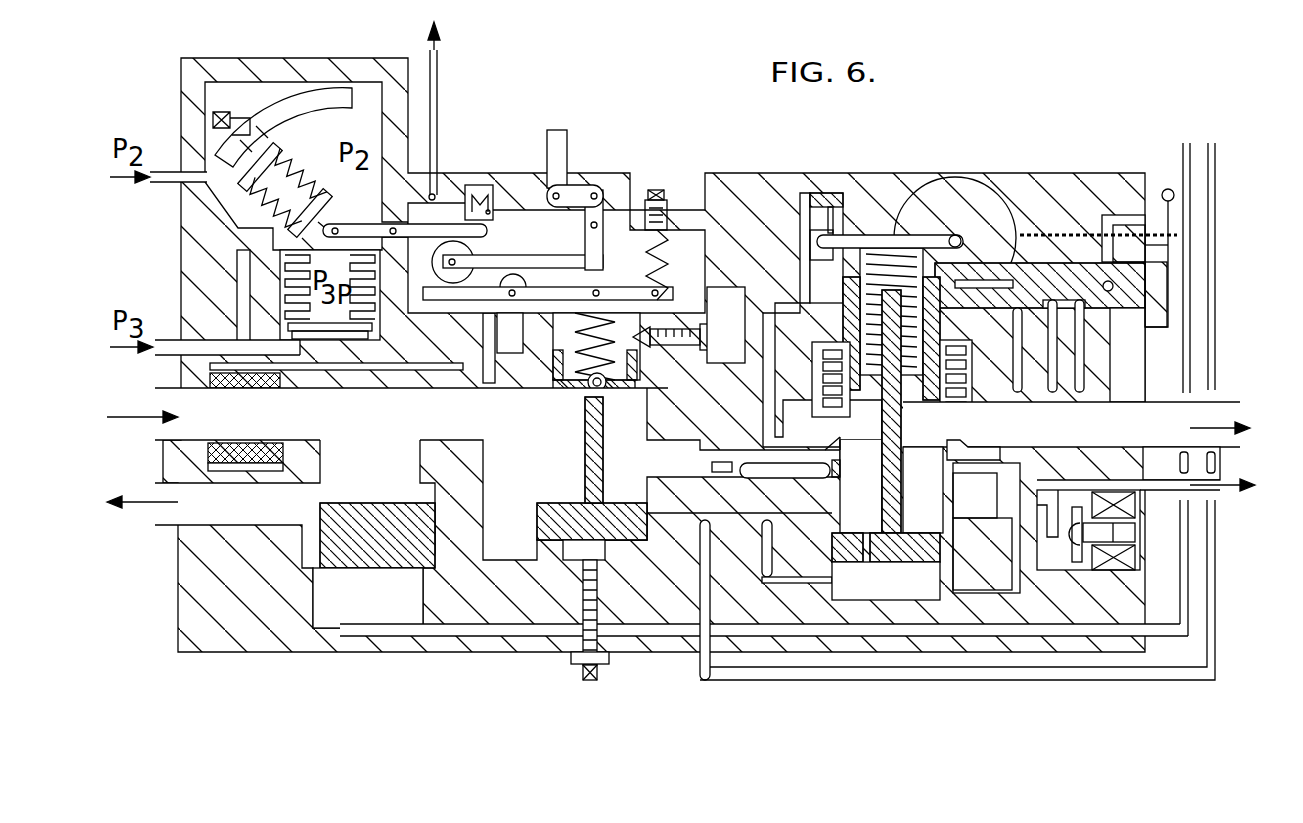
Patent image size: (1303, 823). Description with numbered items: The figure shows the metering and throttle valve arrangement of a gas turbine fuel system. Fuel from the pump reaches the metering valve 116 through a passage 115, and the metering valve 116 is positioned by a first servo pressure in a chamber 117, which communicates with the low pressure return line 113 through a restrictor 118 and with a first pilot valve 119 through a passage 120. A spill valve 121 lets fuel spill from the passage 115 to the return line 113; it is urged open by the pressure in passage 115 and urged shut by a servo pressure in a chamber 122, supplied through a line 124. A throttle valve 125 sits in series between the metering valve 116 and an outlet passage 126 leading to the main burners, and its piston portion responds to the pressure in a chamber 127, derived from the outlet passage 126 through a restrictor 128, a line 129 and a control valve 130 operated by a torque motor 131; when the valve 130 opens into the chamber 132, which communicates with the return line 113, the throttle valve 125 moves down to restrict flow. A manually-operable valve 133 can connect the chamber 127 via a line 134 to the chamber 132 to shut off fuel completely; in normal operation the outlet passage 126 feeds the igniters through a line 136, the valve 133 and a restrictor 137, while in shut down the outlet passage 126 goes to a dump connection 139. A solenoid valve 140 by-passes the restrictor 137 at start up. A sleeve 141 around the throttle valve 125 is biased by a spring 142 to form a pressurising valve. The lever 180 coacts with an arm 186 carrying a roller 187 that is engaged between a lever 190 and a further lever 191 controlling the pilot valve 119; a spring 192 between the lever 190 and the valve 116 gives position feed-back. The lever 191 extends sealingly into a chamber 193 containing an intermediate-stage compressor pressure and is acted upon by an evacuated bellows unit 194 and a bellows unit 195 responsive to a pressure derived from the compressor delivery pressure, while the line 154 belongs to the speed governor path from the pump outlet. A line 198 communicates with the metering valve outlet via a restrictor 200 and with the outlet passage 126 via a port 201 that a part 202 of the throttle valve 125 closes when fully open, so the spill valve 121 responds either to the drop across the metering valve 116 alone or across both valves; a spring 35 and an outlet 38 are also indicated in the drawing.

The chamber 193 is at (363, 100).
The line 154 is at (433, 97).
The bellows unit 194 is at (302, 157).
The bellows unit 195 is at (345, 307).
The restrictor 118 is at (457, 370).
The lever 191 is at (432, 232).
The roller 187 is at (457, 248).
The arm 186 is at (570, 267).
The lever 180 is at (555, 148).
The first pilot valve 119 is at (468, 213).
The lever 190 is at (622, 295).
The spring 192 is at (600, 312).
The passage 120 is at (490, 335).
The passage 115 is at (133, 418).
The low pressure return line 113 is at (137, 505).
The spill valve 121 is at (383, 555).
The chamber 122 is at (410, 615).
The line 198 is at (755, 672).
The line 124 is at (1160, 630).
The metering valve 116 is at (570, 523).
The chamber 117 is at (623, 552).
The restrictor 200 is at (737, 470).
The line 129 is at (775, 427).
The control valve 130 is at (825, 247).
The chamber 132 is at (880, 250).
The spring 35 is at (898, 287).
The torque motor 131 is at (927, 200).
The manually-operable valve 133 is at (1053, 287).
The line 134 is at (1018, 377).
The spring 142 is at (982, 300).
The dump connection 139 is at (1132, 218).
The outlet passage 126 is at (1222, 418).
The sleeve 141 is at (938, 405).
The restrictor 128 is at (868, 533).
The port 201 is at (838, 458).
The part of throttle valve 202 is at (840, 477).
The line 136 is at (987, 457).
The outlet 38 is at (1218, 488).
The restrictor 137 is at (1090, 492).
The solenoid valve 140 is at (1075, 560).
The throttle valve 125 is at (938, 555).
The chamber 127 is at (888, 587).